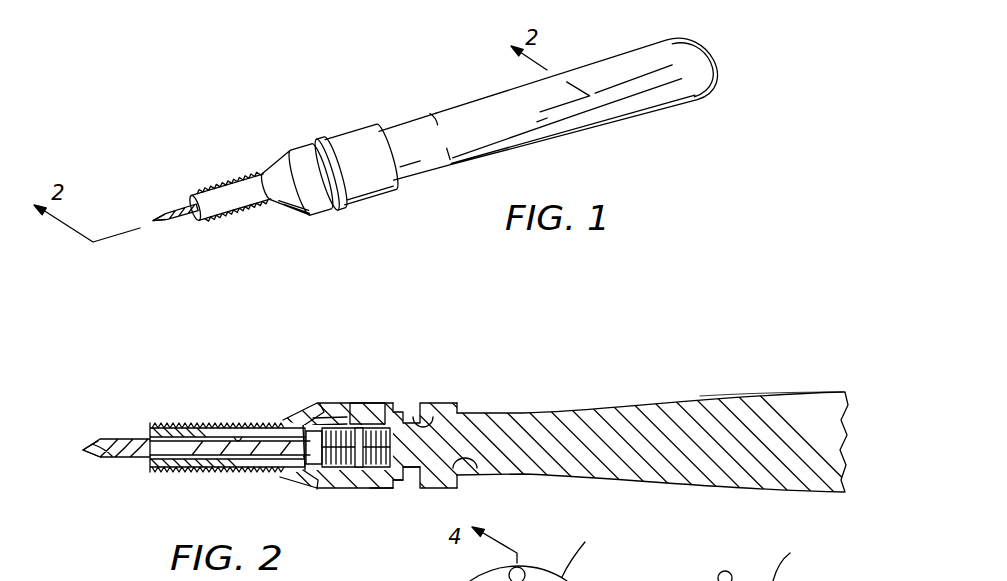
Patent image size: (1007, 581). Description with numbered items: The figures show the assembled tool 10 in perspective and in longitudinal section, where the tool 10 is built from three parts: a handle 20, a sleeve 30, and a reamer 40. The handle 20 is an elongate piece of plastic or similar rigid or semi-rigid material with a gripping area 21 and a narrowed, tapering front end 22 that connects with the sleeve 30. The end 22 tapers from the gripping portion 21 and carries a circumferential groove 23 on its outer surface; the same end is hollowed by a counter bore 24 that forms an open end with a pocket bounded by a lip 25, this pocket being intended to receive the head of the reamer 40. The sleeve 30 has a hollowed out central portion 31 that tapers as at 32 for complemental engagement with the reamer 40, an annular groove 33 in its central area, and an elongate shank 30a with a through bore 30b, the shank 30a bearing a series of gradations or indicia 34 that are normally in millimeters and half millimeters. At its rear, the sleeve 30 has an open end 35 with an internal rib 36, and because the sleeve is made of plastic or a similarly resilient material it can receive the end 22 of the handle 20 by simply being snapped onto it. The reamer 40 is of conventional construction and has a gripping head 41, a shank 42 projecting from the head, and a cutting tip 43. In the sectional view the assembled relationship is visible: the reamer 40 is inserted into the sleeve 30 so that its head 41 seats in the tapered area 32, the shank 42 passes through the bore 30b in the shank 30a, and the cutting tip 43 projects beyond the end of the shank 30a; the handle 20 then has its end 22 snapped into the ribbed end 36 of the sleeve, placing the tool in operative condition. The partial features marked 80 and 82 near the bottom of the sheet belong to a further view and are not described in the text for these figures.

In FIG. 1, the tool 10 is at (413, 92).
In FIG. 2, the tool 10 is at (556, 371).
In FIG. 1, the handle 20 is at (542, 137).
In FIG. 2, the handle 20 is at (680, 480).
In FIG. 1, the gripping area 21 is at (613, 68).
In FIG. 2, the gripping area 21 is at (775, 402).
In FIG. 1, the front end 22 is at (397, 180).
In FIG. 2, the front end 22 is at (485, 422).
In FIG. 1, the circumferential groove 23 is at (363, 163).
In FIG. 2, the circumferential groove 23 is at (427, 428).
In FIG. 2, the counter bore 24 is at (380, 422).
In FIG. 2, the lip 25 is at (323, 420).
In FIG. 1, the sleeve 30 is at (327, 208).
In FIG. 2, the sleeve 30 is at (418, 407).
In FIG. 1, the shank 30a is at (235, 187).
In FIG. 2, the shank 30a is at (183, 472).
In FIG. 2, the through bore 30b is at (237, 437).
In FIG. 2, the hollowed out central portion 31 is at (395, 483).
In FIG. 2, the tapered area 32 is at (297, 468).
In FIG. 1, the annular groove 33 is at (338, 143).
In FIG. 2, the annular groove 33 is at (375, 488).
In FIG. 1, the gradations 34 is at (232, 213).
In FIG. 2, the gradations 34 is at (180, 428).
In FIG. 2, the open end 35 is at (453, 468).
In FIG. 2, the internal rib 36 is at (413, 477).
In FIG. 1, the reamer 40 is at (168, 224).
In FIG. 2, the reamer 40 is at (102, 453).
In FIG. 2, the gripping head 41 is at (365, 460).
In FIG. 2, the shank 42 is at (250, 460).
In FIG. 1, the cutting tip 43 is at (156, 220).
In FIG. 2, the cutting tip 43 is at (88, 448).
In FIG. 2, the hole 80 is at (691, 556).
In FIG. 2, the pin 82 is at (722, 571).